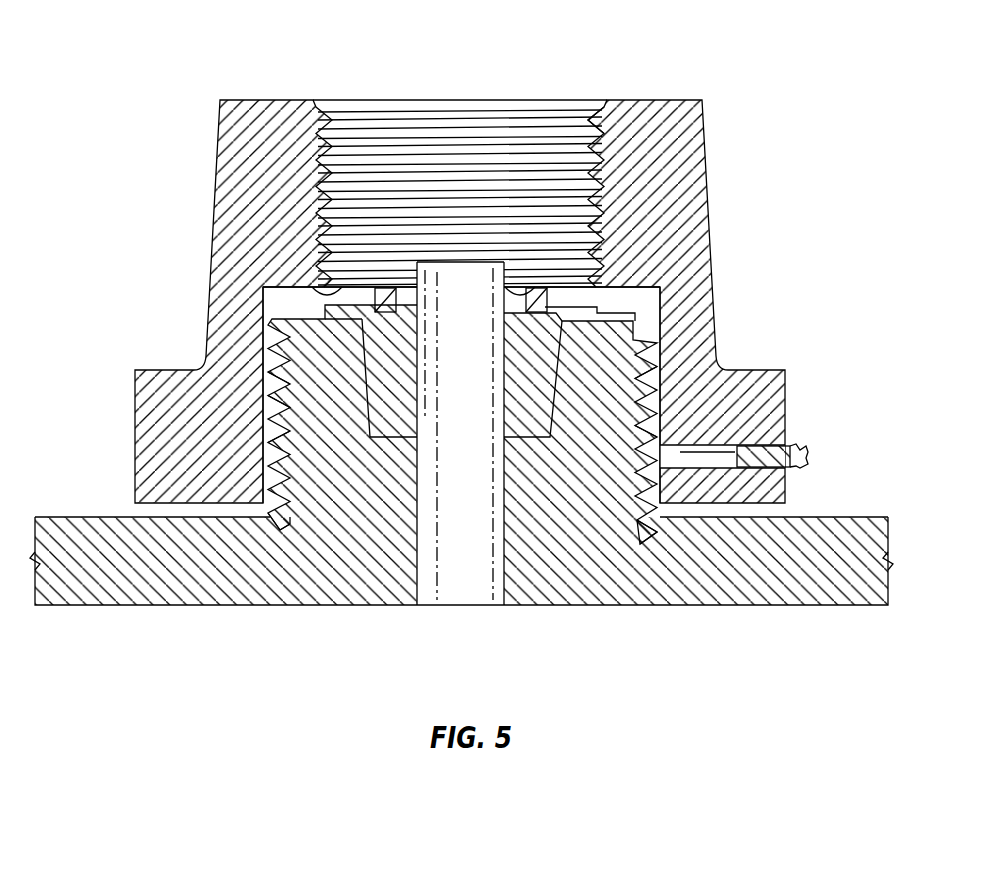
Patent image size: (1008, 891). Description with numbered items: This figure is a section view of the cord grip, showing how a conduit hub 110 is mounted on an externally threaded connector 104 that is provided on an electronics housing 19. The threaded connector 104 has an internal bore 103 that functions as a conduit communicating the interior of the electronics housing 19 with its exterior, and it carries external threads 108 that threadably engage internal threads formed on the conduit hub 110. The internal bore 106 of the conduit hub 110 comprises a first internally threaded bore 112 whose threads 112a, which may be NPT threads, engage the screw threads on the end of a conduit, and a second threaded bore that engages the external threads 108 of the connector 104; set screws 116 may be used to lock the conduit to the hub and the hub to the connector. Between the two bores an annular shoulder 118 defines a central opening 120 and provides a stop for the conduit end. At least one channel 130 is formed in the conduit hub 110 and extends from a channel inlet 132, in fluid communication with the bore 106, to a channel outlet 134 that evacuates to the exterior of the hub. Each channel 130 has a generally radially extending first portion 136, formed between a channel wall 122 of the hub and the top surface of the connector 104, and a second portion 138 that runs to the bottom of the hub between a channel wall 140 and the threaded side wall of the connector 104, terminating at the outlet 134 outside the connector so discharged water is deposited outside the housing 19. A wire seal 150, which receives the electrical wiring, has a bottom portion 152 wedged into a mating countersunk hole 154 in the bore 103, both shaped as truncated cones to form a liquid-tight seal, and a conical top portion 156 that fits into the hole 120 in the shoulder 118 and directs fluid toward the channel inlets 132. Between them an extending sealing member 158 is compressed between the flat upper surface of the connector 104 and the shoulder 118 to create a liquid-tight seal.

The electronics housing 19 is at (834, 518).
The internal bore 103 is at (500, 580).
The threaded connector 104 is at (322, 433).
The internal bore 106 is at (475, 95).
The external threads 108 is at (277, 407).
The conduit hub 110 is at (713, 167).
The first internally threaded bore 112 is at (552, 99).
The threads 112a is at (610, 128).
The set screws 116 is at (808, 456).
The annular shoulder 118 is at (538, 288).
The central opening 120 is at (518, 290).
The channel wall 122 is at (312, 292).
The channel 130 is at (263, 403).
The channel inlet 132 is at (270, 298).
The channel outlet 134 is at (270, 522).
The first portion 136 is at (283, 303).
The second portion 138 is at (277, 378).
The channel wall 140 is at (262, 435).
The wire seal 150 is at (553, 440).
The bottom portion 152 is at (383, 402).
The countersunk hole 154 is at (560, 390).
The top portion 156 is at (410, 285).
The sealing member 158 is at (622, 308).